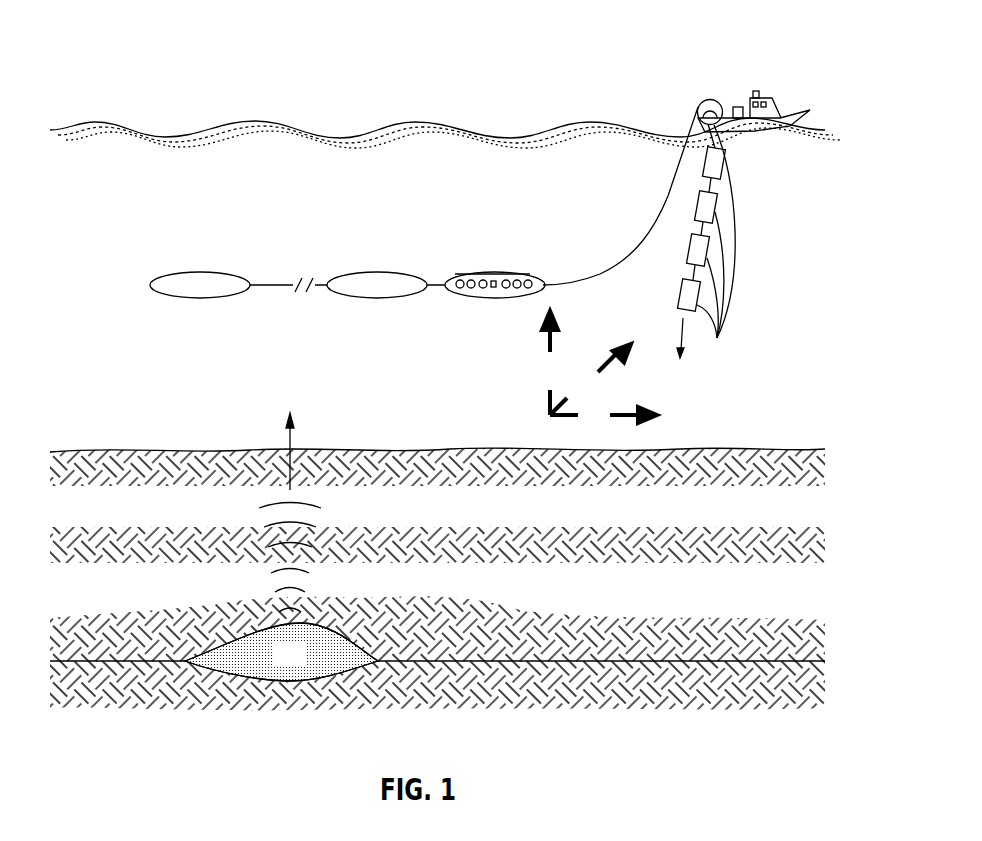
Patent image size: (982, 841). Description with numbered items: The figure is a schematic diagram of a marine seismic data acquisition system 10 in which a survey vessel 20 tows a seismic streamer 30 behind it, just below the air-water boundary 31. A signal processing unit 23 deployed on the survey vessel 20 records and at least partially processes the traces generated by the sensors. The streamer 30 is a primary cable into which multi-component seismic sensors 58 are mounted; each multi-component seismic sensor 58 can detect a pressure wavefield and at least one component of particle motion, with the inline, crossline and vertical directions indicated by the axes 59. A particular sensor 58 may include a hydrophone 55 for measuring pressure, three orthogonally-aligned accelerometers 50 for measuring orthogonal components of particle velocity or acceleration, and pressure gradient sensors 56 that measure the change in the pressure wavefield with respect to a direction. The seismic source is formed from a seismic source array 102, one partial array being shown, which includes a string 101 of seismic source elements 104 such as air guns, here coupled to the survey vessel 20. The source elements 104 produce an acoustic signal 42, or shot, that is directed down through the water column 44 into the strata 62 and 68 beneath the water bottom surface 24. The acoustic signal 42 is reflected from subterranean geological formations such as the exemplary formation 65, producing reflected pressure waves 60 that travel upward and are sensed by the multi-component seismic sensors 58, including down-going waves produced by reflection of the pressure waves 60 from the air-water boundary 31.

The marine seismic data acquisition system 10 is at (243, 97).
The survey vessel 20 is at (805, 110).
The signal processing unit 23 is at (737, 106).
The water bottom surface 24 is at (719, 447).
The seismic streamer 30 is at (663, 203).
The air-water boundary 31 is at (393, 122).
The acoustic signal 42 is at (686, 340).
The water column 44 is at (749, 233).
The accelerometers 50 is at (483, 280).
The hydrophone 55 is at (493, 289).
The pressure gradient sensors 56 is at (528, 280).
The multi-component seismic sensor 58 is at (208, 272).
The axes 59 is at (537, 423).
The pressure waves 60 is at (252, 578).
The stratum 62 is at (445, 638).
The formation 65 is at (303, 666).
The stratum 68 is at (445, 701).
The string 101 is at (745, 248).
The seismic source array 102 is at (740, 281).
The seismic source elements 104 is at (704, 340).